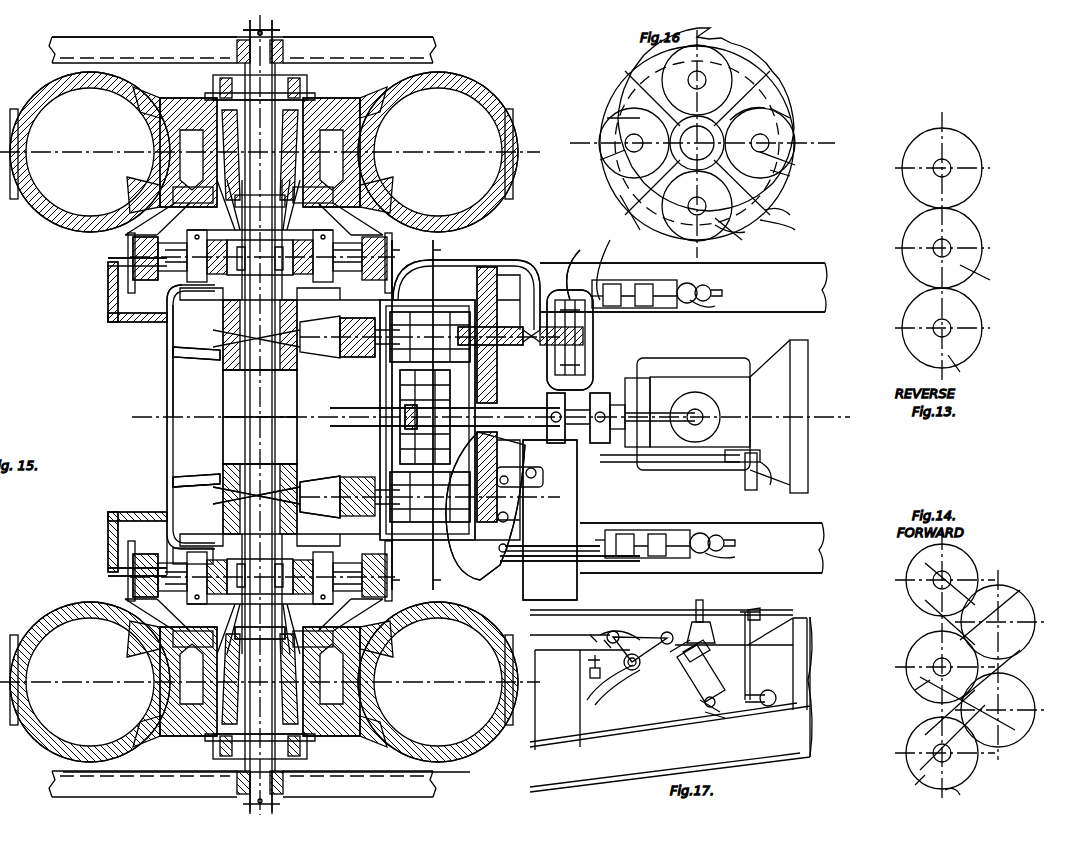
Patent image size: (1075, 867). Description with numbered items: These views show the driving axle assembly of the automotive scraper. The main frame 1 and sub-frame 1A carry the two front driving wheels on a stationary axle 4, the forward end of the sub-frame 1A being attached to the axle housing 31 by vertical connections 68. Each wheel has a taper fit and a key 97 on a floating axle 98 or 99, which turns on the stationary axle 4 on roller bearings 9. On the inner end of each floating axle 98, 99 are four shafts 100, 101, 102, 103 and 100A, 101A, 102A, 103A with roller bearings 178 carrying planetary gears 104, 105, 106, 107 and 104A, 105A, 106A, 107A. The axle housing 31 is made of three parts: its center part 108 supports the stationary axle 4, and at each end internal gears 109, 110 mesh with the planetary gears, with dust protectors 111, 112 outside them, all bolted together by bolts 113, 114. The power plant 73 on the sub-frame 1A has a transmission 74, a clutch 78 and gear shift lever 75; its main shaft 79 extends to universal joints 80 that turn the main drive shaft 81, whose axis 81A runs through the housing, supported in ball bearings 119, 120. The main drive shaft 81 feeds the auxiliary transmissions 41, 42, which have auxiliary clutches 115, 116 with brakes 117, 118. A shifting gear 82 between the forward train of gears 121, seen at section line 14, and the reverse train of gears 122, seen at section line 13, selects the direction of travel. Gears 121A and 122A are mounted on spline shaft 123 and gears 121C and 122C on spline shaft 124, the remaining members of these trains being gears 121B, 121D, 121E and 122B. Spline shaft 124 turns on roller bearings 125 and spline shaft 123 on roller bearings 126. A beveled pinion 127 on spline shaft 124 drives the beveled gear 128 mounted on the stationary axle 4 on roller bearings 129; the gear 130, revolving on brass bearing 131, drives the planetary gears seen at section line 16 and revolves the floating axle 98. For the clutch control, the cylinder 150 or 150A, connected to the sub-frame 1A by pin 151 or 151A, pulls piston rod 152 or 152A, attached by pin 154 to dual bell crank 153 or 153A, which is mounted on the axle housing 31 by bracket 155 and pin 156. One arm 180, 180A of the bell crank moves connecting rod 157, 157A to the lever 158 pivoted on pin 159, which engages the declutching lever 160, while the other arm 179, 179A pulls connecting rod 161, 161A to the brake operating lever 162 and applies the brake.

In FIG. 15, the main frame 1 is at (420, 48).
In FIG. 15, the sub-frame 1A is at (778, 312).
In FIG. 17, the sub-frame 1A is at (760, 732).
In FIG. 15, the stationary axle 4 is at (250, 20).
In FIG. 16, the stationary axle 4 is at (620, 212).
In FIG. 15, the roller bearings 9 is at (262, 100).
In FIG. 15, the section line 13— 13 is at (403, 414).
In FIG. 15, the section line 14— 14 is at (443, 414).
In FIG. 15, the section line 16— 16 is at (428, 235).
In FIG. 15, the axle housing 31 is at (167, 375).
In FIG. 17, the axle housing 31 is at (557, 700).
In FIG. 15, the auxiliary transmission 41 is at (500, 565).
In FIG. 15, the auxiliary transmission 42 is at (460, 262).
In FIG. 15, the vertical connections 68 is at (108, 280).
In FIG. 15, the power plant 73 is at (808, 374).
In FIG. 15, the transmission 74 is at (712, 365).
In FIG. 15, the gear shift lever 75 is at (650, 378).
In FIG. 17, the gear shift lever 75 is at (703, 603).
In FIG. 15, the clutch 78 is at (762, 480).
In FIG. 17, the clutch 78 is at (772, 645).
In FIG. 15, the main shaft 79 is at (600, 393).
In FIG. 15, the universal joints 80 is at (560, 393).
In FIG. 15, the main drive shaft 81 is at (400, 425).
In FIG. 13, the main drive shaft 81 is at (935, 255).
In FIG. 14, the main drive shaft 81 is at (930, 675).
In FIG. 15, the drive shaft axis 81A is at (490, 417).
In FIG. 15, the shifting gear 82 is at (380, 390).
In FIG. 15, the key 97 is at (308, 98).
In FIG. 15, the floating axle 98 is at (135, 595).
In FIG. 15, the floating axle 99 is at (213, 98).
In FIG. 16, the shaft 100 is at (625, 153).
In FIG. 16, the shaft 100A is at (591, 170).
In FIG. 16, the shaft 101 is at (795, 160).
In FIG. 16, the shaft 101A is at (804, 173).
In FIG. 16, the shaft 102 is at (680, 218).
In FIG. 16, the shaft 102A is at (665, 227).
In FIG. 16, the shaft 103 is at (690, 80).
In FIG. 16, the shaft 103A is at (645, 64).
In FIG. 16, the planetary gear 104 is at (730, 75).
In FIG. 16, the planetary gear 104A is at (774, 107).
In FIG. 16, the planetary gear 105 is at (775, 117).
In FIG. 16, the planetary gear 105A is at (803, 118).
In FIG. 16, the planetary gear 106 is at (739, 239).
In FIG. 16, the planetary gear 106A is at (743, 237).
In FIG. 16, the planetary gear 107 is at (615, 122).
In FIG. 16, the planetary gear 107A is at (597, 119).
In FIG. 15, the center part 108 is at (173, 440).
In FIG. 15, the internal gear 109 is at (108, 572).
In FIG. 16, the internal gear 109 is at (770, 212).
In FIG. 15, the internal gear 110 is at (108, 258).
In FIG. 16, the internal gear 110 is at (787, 225).
In FIG. 15, the dust protector 111 is at (145, 648).
In FIG. 15, the dust protector 112 is at (135, 240).
In FIG. 15, the bolts 113 is at (140, 510).
In FIG. 15, the bolts 114 is at (150, 322).
In FIG. 15, the auxiliary clutch 115 is at (460, 570).
In FIG. 15, the auxiliary clutch 116 is at (490, 267).
In FIG. 15, the brake 117 is at (560, 560).
In FIG. 15, the brake 118 is at (585, 290).
In FIG. 15, the ball bearing 119 is at (473, 477).
In FIG. 15, the ball bearing 120 is at (400, 450).
In FIG. 14, the train of gears 121 is at (964, 785).
In FIG. 14, the gear 121A is at (960, 548).
In FIG. 14, the gear 121B is at (906, 694).
In FIG. 14, the gear 121C is at (898, 783).
In FIG. 14, the gear 121D is at (1010, 740).
In FIG. 14, the gear 121E is at (1008, 590).
In FIG. 13, the train of gears 122 is at (935, 225).
In FIG. 13, the gear 122A is at (970, 150).
In FIG. 13, the gear 122B is at (992, 275).
In FIG. 13, the gear 122C is at (971, 368).
In FIG. 15, the spline shaft 123 is at (345, 357).
In FIG. 13, the spline shaft 123 is at (932, 165).
In FIG. 14, the spline shaft 123 is at (932, 576).
In FIG. 15, the spline shaft 124 is at (335, 490).
In FIG. 13, the spline shaft 124 is at (932, 326).
In FIG. 14, the spline shaft 124 is at (930, 748).
In FIG. 15, the roller bearings 125 is at (380, 497).
In FIG. 15, the roller bearings 126 is at (380, 337).
In FIG. 15, the beveled pinion 127 is at (297, 450).
In FIG. 15, the beveled gear 128 is at (215, 490).
In FIG. 15, the roller bearings 129 is at (235, 480).
In FIG. 15, the gear 130 is at (210, 548).
In FIG. 16, the gear 130 is at (680, 128).
In FIG. 15, the brass bearing 131 is at (255, 548).
In FIG. 15, the cylinder 150 is at (702, 532).
In FIG. 17, the cylinder 150 is at (700, 670).
In FIG. 15, the cylinder 150A is at (700, 284).
In FIG. 17, the cylinder 150A is at (707, 662).
In FIG. 17, the pin 151 is at (703, 705).
In FIG. 17, the pin 151A is at (695, 719).
In FIG. 15, the piston rod 152 is at (710, 552).
In FIG. 17, the piston rod 152 is at (647, 663).
In FIG. 15, the piston rod 152A is at (700, 306).
In FIG. 15, the dual bell crank 153 is at (655, 535).
In FIG. 17, the dual bell crank 153 is at (640, 640).
In FIG. 15, the dual bell crank 153A is at (645, 306).
In FIG. 17, the pin 154 is at (690, 622).
In FIG. 17, the bracket 155 is at (592, 705).
In FIG. 17, the pin 156 is at (636, 668).
In FIG. 15, the connecting rod 157 is at (540, 560).
In FIG. 17, the connecting rod 157 is at (590, 632).
In FIG. 15, the connecting rod 157A is at (595, 266).
In FIG. 15, the lever 158 is at (515, 540).
In FIG. 15, the pin 159 is at (510, 516).
In FIG. 15, the declutching lever 160 is at (535, 468).
In FIG. 17, the connecting rod 161 is at (590, 670).
In FIG. 15, the connecting rod 161A is at (593, 330).
In FIG. 15, the brake operating lever 162 is at (605, 535).
In FIG. 15, the roller bearings 178 is at (160, 300).
In FIG. 15, the arm 179 is at (570, 557).
In FIG. 17, the arm 179 is at (597, 644).
In FIG. 15, the arm 179A is at (605, 300).
In FIG. 15, the arm 180 is at (615, 558).
In FIG. 17, the arm 180 is at (625, 625).
In FIG. 15, the arm 180A is at (625, 282).